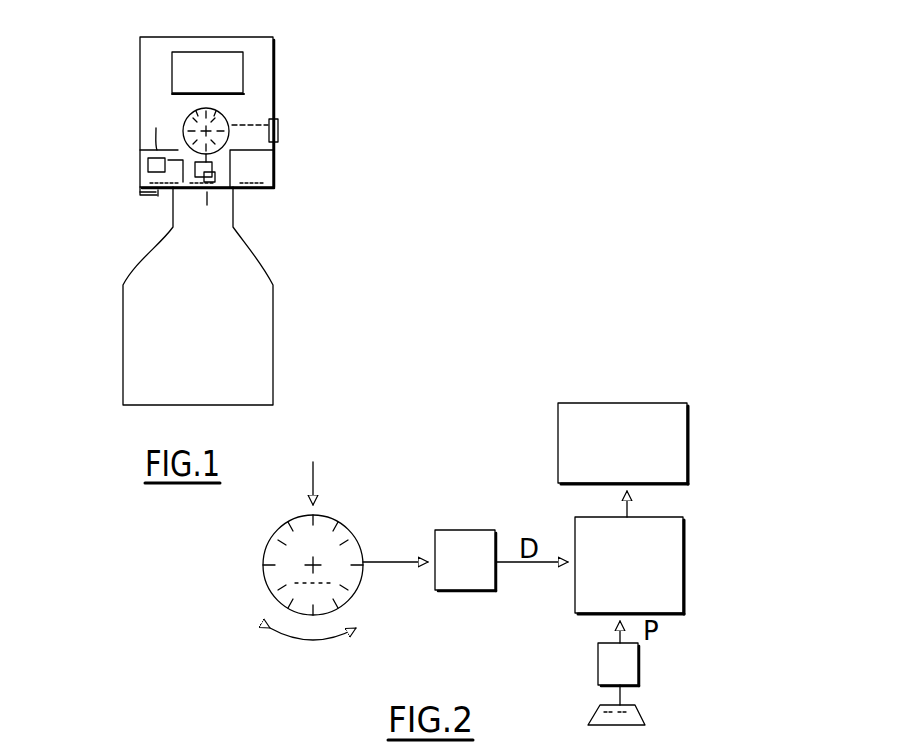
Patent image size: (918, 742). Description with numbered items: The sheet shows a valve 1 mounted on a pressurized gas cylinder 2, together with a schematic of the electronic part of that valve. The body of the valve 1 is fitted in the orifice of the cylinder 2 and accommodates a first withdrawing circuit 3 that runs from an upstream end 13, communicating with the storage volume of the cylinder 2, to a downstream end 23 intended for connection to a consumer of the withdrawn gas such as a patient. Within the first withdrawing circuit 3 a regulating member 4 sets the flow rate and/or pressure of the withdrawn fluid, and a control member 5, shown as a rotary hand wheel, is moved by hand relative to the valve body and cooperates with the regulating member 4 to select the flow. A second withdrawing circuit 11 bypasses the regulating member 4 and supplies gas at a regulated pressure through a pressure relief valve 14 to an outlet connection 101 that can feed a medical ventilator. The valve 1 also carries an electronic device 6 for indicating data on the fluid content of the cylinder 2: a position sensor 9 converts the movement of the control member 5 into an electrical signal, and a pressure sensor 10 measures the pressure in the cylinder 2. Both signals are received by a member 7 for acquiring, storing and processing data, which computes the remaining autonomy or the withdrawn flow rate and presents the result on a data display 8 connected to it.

In FIG. 1, the valve 1 is at (140, 133).
In FIG. 1, the pressurized gas cylinder 2 is at (125, 290).
In FIG. 2, the pressurized gas cylinder 2 is at (597, 710).
In FIG. 1, the first withdrawing circuit 3 is at (215, 178).
In FIG. 1, the regulating member 4 is at (218, 167).
In FIG. 2, the regulating member 4 is at (287, 570).
In FIG. 1, the control member 5 is at (240, 137).
In FIG. 2, the control member 5 is at (262, 584).
In FIG. 2, the electronic device 6 is at (693, 517).
In FIG. 2, the member for acquiring, storing and processing data 7 is at (640, 589).
In FIG. 1, the data display 8 is at (172, 74).
In FIG. 2, the data display 8 is at (640, 456).
In FIG. 2, the position sensor 9 is at (478, 578).
In FIG. 2, the pressure sensor 10 is at (618, 664).
In FIG. 1, the second withdrawing circuit 11 is at (160, 196).
In FIG. 1, the upstream end 13 is at (207, 197).
In FIG. 1, the pressure relief valve 14 is at (155, 128).
In FIG. 1, the downstream end 23 is at (285, 113).
In FIG. 1, the outlet connection 101 is at (150, 196).